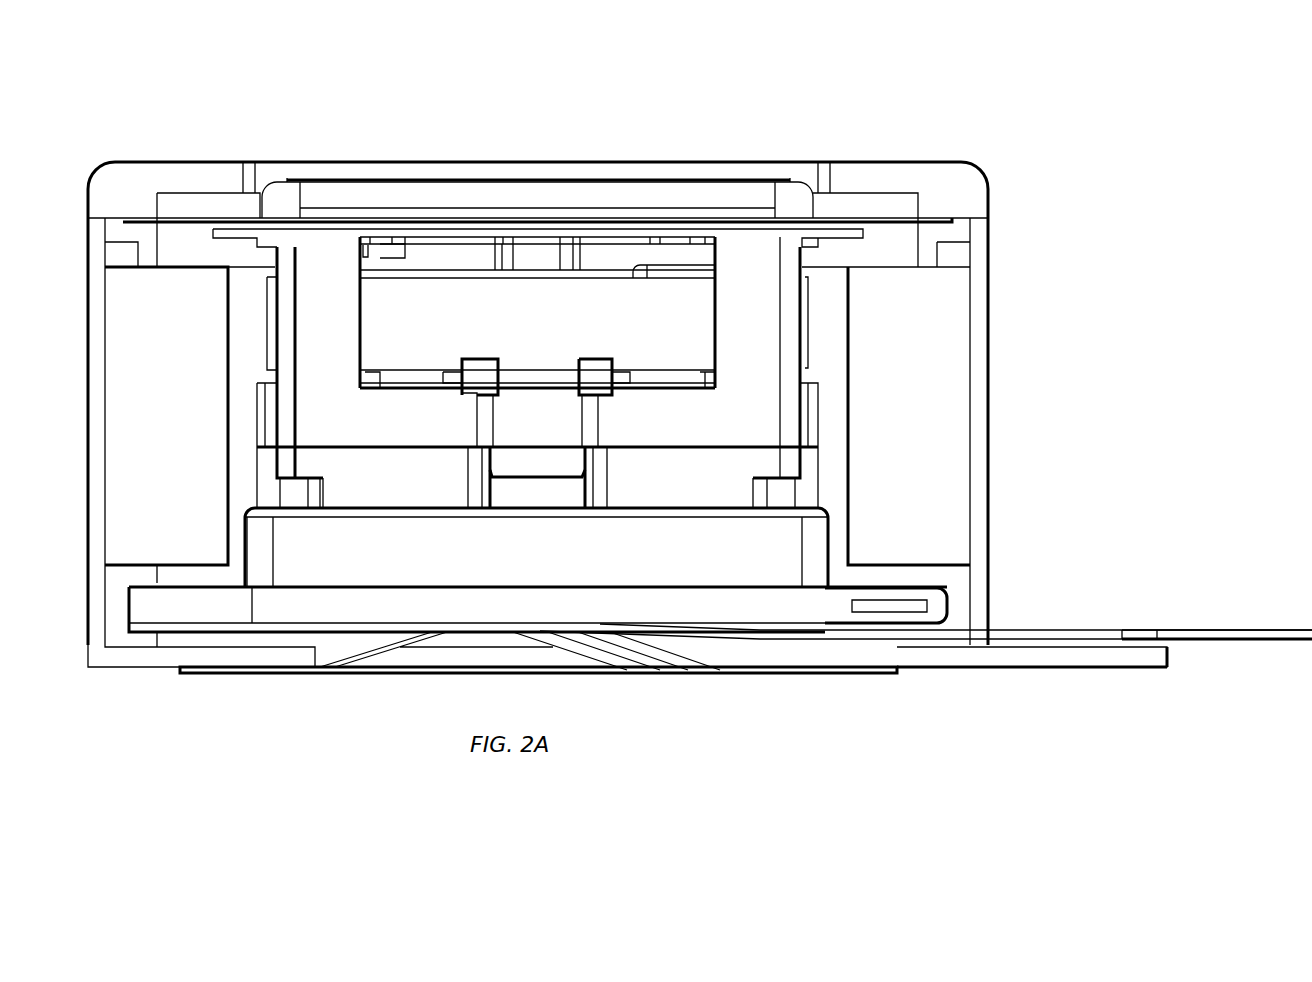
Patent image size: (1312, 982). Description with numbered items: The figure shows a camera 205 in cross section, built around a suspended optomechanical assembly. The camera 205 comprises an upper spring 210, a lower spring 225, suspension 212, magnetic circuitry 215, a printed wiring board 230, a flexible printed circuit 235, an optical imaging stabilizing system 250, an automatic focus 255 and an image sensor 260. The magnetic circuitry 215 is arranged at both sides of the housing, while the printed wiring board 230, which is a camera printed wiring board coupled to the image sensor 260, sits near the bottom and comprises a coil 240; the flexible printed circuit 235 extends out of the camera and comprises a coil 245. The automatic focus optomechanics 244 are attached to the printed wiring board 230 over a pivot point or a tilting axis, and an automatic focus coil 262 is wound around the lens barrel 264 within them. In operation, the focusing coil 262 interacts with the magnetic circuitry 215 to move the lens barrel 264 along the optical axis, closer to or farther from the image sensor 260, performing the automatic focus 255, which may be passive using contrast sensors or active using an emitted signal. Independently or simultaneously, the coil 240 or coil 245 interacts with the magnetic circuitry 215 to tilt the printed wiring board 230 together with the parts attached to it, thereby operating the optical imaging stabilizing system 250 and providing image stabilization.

The camera 205 is at (221, 102).
The upper spring 210 is at (896, 222).
The suspension 212 is at (820, 408).
The magnetic circuitry 215 is at (136, 453).
The lower spring 225 is at (706, 656).
The printed wiring board 230 is at (898, 580).
The flexible printed circuit 235 is at (1062, 630).
The coil 240 is at (870, 613).
The automatic focus optomechanics 244 is at (395, 540).
The coil 245 is at (1137, 630).
The optical imaging stabilizing system 250 is at (626, 176).
The automatic focus 255 is at (779, 178).
The image sensor 260 is at (536, 493).
The automatic focus coil 262 is at (371, 330).
The lens barrel 264 is at (465, 278).